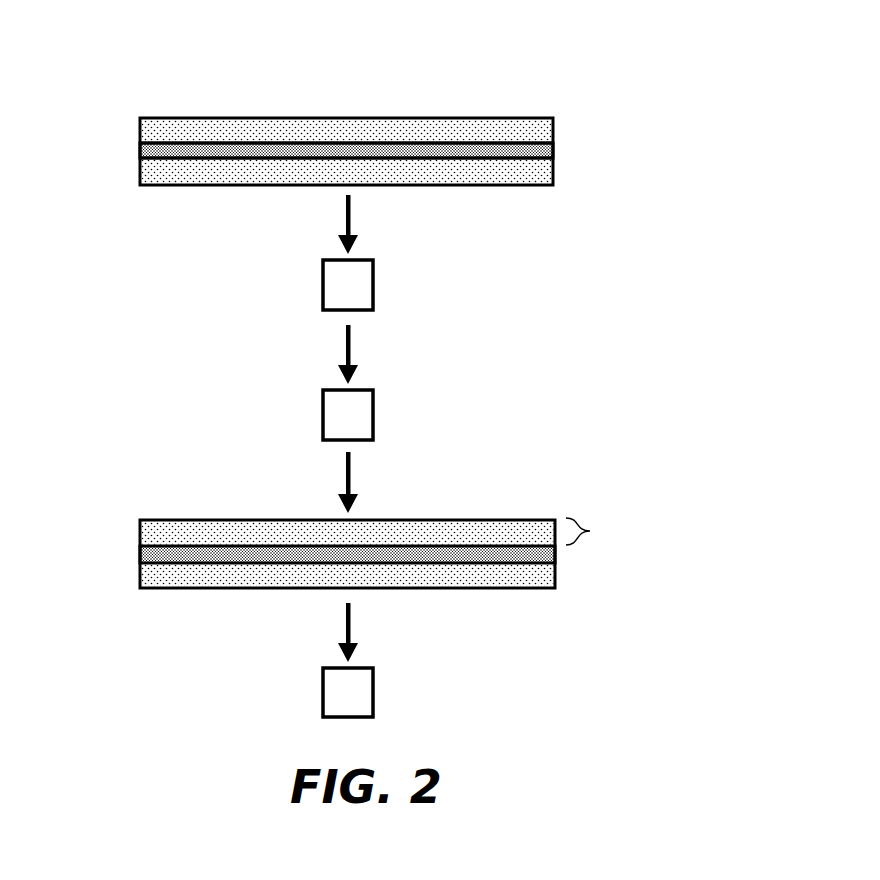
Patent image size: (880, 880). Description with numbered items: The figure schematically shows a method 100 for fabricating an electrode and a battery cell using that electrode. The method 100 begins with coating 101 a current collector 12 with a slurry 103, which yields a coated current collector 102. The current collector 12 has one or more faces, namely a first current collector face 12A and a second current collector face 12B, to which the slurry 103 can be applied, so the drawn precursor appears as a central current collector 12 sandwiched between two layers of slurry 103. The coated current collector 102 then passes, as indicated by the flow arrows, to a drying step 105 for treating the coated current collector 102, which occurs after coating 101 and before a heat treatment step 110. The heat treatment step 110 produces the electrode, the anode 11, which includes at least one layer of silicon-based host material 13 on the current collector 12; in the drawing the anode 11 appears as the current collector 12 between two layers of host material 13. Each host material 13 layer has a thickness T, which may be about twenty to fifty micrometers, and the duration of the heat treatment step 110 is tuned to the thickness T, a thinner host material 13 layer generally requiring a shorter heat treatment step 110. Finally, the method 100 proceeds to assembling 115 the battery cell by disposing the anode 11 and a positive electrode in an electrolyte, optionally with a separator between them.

The method 100 is at (587, 78).
The coating 101 is at (415, 153).
The coated current collector 102 is at (128, 98).
The slurry 103 is at (541, 130).
The current collector 12 is at (142, 152).
The first current collector face 12A is at (207, 142).
The second current collector face 12B is at (217, 160).
The drying step 105 is at (386, 289).
The heat treatment step 110 is at (386, 419).
The anode 11 is at (411, 538).
The silicon-based host material 13 is at (516, 530).
The thickness T is at (590, 531).
The assembling 115 is at (386, 694).